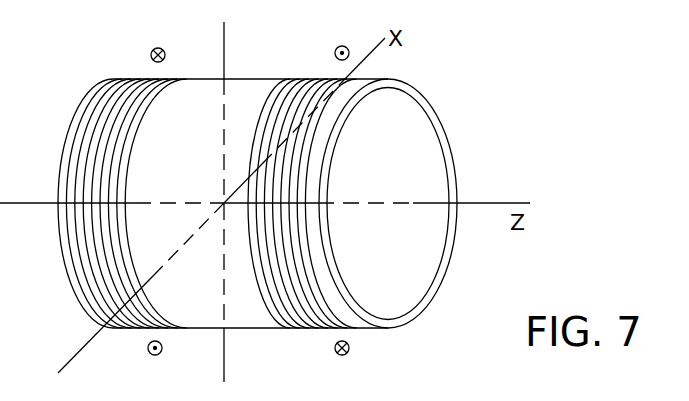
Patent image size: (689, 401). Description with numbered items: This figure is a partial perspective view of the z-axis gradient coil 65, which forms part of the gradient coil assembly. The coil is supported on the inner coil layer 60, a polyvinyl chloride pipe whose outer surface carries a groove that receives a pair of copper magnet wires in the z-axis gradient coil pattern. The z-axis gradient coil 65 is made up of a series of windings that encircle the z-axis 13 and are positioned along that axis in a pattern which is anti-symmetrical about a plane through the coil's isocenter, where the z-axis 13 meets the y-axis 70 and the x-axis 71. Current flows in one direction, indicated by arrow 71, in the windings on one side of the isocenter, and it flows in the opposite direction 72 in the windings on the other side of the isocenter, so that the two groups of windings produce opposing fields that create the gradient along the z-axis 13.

The z-axis 13 is at (481, 200).
The inner coil layer 60 is at (204, 295).
The z-axis gradient coil 65 is at (365, 345).
The y-axis 70 is at (225, 353).
The arrow indicating current direction 71 is at (233, 217).
The opposite current direction 72 is at (140, 192).